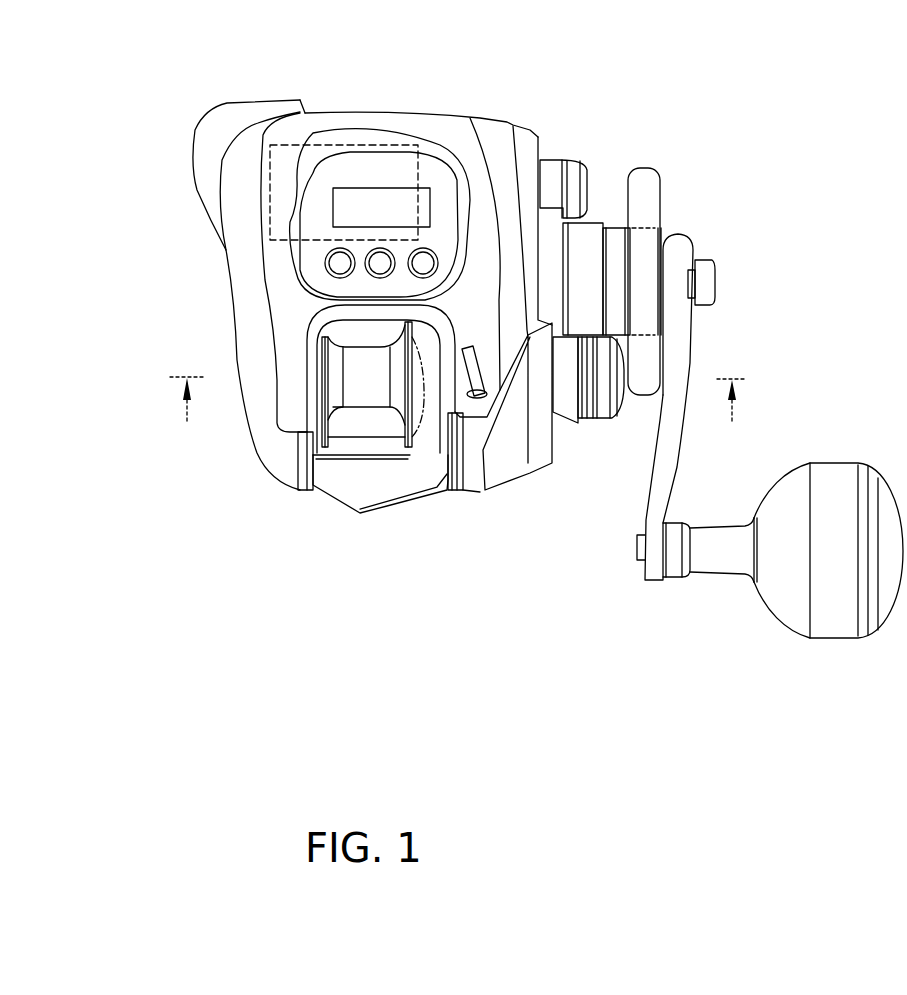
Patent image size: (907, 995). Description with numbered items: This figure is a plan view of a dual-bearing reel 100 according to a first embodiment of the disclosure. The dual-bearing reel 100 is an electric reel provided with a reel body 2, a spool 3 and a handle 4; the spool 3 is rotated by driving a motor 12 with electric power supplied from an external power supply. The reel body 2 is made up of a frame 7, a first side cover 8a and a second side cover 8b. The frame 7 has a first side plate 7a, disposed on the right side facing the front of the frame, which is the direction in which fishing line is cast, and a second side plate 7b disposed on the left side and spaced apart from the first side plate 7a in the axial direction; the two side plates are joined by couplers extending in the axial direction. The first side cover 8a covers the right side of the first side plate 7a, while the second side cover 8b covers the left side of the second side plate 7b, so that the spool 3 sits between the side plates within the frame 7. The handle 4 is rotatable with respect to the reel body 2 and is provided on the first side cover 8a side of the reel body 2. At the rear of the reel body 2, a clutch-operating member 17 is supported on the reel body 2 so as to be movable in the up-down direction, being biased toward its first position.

The dual-bearing reel 100 is at (690, 129).
The reel body 2 is at (507, 108).
The spool 3 is at (362, 390).
The handle 4 is at (690, 470).
The frame 7 is at (437, 493).
The first side plate 7a is at (447, 473).
The second side plate 7b is at (285, 487).
The first side cover 8a is at (527, 137).
The second side cover 8b is at (240, 280).
The motor 12 is at (352, 148).
The clutch-operating member 17 is at (326, 508).